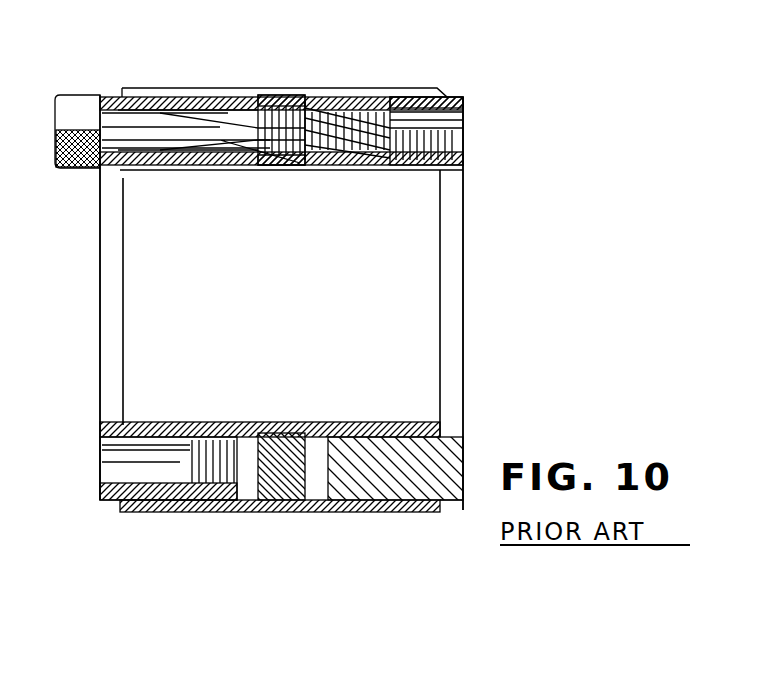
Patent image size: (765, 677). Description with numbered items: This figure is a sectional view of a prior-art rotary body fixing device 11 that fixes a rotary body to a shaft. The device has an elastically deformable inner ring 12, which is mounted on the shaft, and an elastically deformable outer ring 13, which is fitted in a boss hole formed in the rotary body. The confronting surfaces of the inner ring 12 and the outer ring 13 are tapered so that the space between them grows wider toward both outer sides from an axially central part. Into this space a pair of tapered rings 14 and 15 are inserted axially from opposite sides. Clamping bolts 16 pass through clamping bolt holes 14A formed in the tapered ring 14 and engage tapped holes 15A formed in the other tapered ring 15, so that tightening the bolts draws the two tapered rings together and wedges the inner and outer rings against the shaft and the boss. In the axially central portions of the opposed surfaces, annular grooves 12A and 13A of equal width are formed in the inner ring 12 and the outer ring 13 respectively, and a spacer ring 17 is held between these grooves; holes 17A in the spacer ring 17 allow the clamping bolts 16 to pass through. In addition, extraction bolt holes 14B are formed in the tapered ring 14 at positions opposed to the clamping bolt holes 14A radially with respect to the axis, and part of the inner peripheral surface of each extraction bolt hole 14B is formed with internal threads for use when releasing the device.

The rotary body fixing device 11 is at (483, 80).
The inner ring 12 is at (364, 172).
The annular groove 12A is at (274, 172).
The outer ring 13 is at (338, 89).
The annular groove 13A is at (292, 95).
The tapered ring 14 is at (113, 92).
The clamping bolt hole 14A is at (157, 114).
The extraction bolt hole 14B is at (165, 478).
The tapered ring 15 is at (455, 99).
The tapped hole 15A is at (445, 112).
The clamping bolt 16 is at (213, 127).
The spacer ring 17 is at (300, 172).
The hole 17A is at (205, 172).